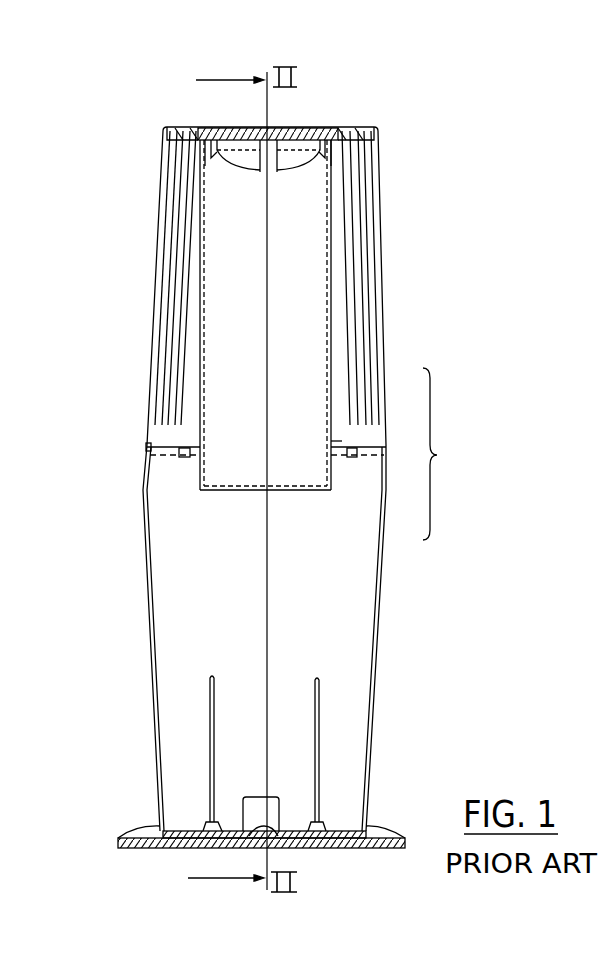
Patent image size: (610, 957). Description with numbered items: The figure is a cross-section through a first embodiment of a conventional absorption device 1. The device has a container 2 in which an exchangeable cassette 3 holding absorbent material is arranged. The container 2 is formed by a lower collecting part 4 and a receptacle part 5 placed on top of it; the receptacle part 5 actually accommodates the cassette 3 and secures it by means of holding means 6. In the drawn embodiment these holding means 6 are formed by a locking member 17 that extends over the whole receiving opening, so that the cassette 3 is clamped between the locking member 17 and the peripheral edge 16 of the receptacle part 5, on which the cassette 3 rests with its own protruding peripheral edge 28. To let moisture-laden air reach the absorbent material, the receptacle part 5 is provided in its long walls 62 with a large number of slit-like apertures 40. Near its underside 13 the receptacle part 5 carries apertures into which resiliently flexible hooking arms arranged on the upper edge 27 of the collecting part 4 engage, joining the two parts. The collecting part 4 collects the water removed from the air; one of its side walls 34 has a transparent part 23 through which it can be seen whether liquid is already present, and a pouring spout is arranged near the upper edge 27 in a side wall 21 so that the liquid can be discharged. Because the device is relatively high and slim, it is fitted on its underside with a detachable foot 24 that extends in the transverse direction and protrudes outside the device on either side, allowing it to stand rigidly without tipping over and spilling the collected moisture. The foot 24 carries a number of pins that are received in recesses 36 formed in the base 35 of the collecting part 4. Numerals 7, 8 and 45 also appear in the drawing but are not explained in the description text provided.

The absorption device 1 is at (422, 312).
The container 2 is at (439, 454).
The exchangeable cassette 3 is at (229, 494).
The collecting part 4 is at (147, 682).
The receptacle part 5 is at (147, 352).
The holding means 6 is at (328, 124).
The inner cylinder 7 is at (205, 345).
The inner flange 8 is at (206, 152).
The underside 13 is at (333, 442).
The peripheral edge 16 is at (166, 160).
The locking member 17 is at (289, 131).
The side wall 21 is at (206, 570).
The transparent part 23 is at (378, 647).
The detachable foot 24 is at (140, 837).
The upper edge 27 is at (361, 458).
The protruding peripheral edge 28 is at (330, 154).
The side wall 34 is at (148, 597).
The base 35 is at (187, 833).
The recesses 36 is at (271, 801).
The slit-like apertures 40 is at (160, 377).
The recess 45 is at (240, 128).
The long walls 62 is at (143, 443).